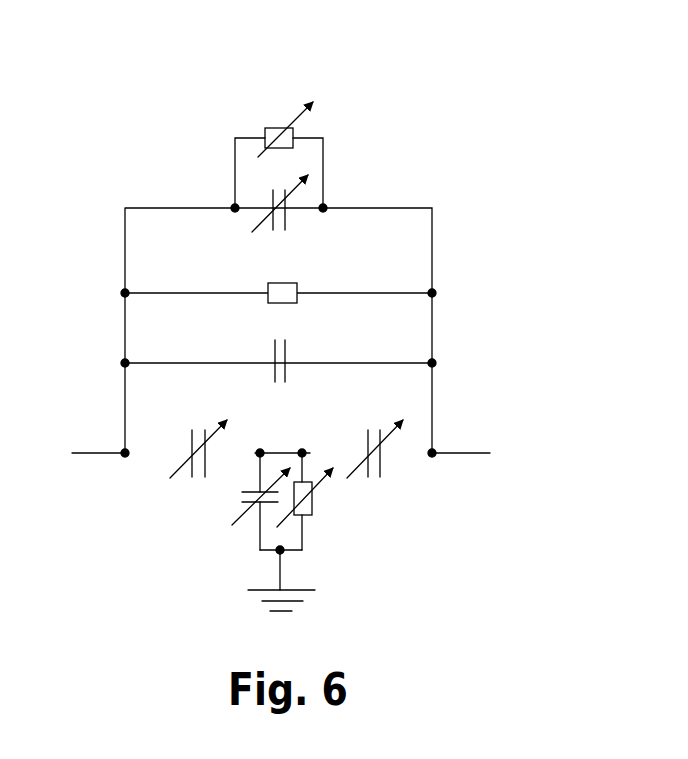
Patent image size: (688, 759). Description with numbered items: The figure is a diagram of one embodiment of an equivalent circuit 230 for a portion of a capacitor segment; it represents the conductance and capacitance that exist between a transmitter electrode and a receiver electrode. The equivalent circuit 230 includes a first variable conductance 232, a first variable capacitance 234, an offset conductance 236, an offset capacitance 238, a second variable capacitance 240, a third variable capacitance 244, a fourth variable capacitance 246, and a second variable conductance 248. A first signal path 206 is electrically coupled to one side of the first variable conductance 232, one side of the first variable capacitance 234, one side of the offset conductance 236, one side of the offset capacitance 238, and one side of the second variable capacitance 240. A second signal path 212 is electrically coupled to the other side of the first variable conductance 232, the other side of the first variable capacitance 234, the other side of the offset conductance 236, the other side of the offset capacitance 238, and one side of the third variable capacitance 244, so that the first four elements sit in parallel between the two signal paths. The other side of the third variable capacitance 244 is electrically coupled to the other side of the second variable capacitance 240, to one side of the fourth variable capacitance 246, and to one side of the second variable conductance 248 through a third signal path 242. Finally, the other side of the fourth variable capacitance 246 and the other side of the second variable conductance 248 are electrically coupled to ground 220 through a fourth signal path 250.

The equivalent circuit 230 is at (434, 83).
The variable conductance G'TR 232 is at (273, 128).
The variable capacitance C'TR 234 is at (287, 213).
The offset conductance GTR_OFFSET 236 is at (268, 287).
The offset capacitance CTR_OFFSET 238 is at (273, 357).
The variable capacitance COT 240 is at (190, 445).
The signal path 242 is at (286, 452).
The variable capacitance COR 244 is at (366, 445).
The variable capacitance COG 246 is at (252, 490).
The variable conductance GOG 248 is at (306, 517).
The signal path 250 is at (283, 567).
The ground 220 is at (280, 612).
The signal path 206 is at (88, 457).
The signal path 212 is at (462, 455).